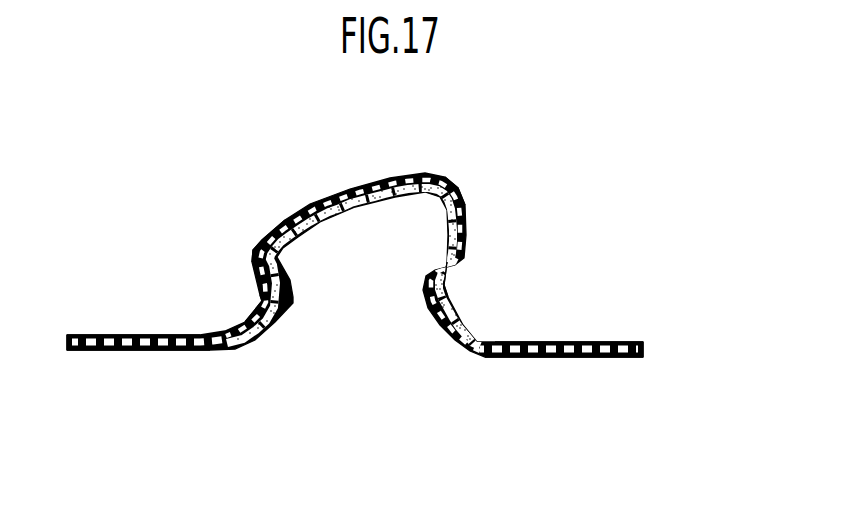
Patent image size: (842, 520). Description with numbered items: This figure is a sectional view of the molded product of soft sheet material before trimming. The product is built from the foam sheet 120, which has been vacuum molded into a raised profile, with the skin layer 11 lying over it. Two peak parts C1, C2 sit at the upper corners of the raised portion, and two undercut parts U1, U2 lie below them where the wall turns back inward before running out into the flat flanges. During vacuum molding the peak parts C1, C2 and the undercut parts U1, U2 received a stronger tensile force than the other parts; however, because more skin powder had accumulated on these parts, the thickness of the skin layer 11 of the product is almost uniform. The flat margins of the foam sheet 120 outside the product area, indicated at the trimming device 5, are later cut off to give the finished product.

The skin layer 11 is at (355, 231).
The foam sheet 120 is at (353, 266).
The trimming device 5 is at (208, 357).
The peak part C1 is at (252, 249).
The peak part C2 is at (457, 181).
The undercut part U1 is at (254, 302).
The undercut part U2 is at (452, 292).